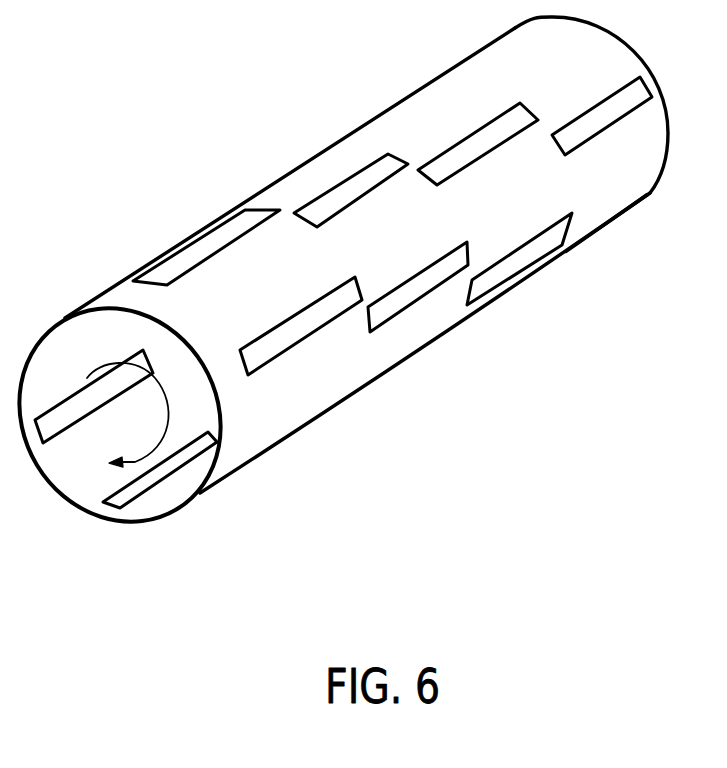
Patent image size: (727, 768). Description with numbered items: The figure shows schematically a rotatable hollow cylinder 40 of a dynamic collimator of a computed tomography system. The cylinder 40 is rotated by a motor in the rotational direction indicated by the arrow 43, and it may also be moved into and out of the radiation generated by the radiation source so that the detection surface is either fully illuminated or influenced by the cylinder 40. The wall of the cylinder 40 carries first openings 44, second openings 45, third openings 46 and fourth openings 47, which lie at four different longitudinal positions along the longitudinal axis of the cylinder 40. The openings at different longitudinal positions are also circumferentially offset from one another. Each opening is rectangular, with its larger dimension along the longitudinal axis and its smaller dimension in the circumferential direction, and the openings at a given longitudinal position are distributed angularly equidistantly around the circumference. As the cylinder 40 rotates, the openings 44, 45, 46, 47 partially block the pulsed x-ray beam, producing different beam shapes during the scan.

The rotatable hollow cylinder 40 is at (540, 421).
The arrow 43 is at (167, 410).
The first openings 44 is at (205, 234).
The second openings 45 is at (408, 320).
The third openings 46 is at (443, 120).
The fourth openings 47 is at (616, 242).